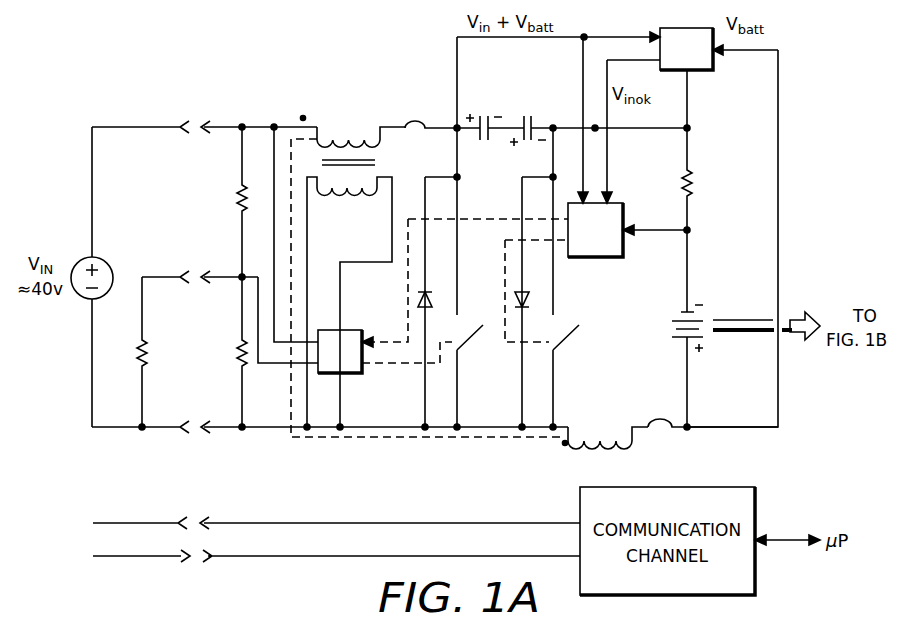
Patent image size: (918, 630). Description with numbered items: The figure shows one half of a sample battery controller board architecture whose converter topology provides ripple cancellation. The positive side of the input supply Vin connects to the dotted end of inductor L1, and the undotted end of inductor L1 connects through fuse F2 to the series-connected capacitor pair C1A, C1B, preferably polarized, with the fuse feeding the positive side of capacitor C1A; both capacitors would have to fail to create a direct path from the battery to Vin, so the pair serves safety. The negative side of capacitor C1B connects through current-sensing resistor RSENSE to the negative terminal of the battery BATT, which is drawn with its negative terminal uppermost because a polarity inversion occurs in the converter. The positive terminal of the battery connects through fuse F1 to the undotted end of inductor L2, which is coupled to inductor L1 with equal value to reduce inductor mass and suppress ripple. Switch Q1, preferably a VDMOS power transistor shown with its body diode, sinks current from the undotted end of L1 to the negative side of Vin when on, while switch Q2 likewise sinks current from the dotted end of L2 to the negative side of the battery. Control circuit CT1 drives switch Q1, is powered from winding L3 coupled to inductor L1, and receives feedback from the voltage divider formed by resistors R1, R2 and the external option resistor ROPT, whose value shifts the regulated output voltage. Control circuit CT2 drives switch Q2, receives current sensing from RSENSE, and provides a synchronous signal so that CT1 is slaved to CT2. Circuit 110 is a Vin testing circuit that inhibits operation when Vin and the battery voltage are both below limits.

The Vin testing circuit 110 is at (700, 72).
The inductor L1 is at (353, 133).
The inductor L2 is at (606, 452).
The winding L3 is at (349, 302).
The resistor R1 is at (230, 202).
The resistor R2 is at (230, 352).
The external option resistor ROPT is at (163, 352).
The current-sensing resistor RSENSE is at (717, 191).
The capacitor C1A is at (494, 113).
The capacitor C1B is at (598, 116).
The fuse F1 is at (713, 438).
The fuse F2 is at (442, 115).
The switch Q1 is at (476, 376).
The switch Q2 is at (571, 376).
The control circuit CT1 is at (345, 351).
The control circuit CT2 is at (601, 224).
The battery BATT is at (665, 328).